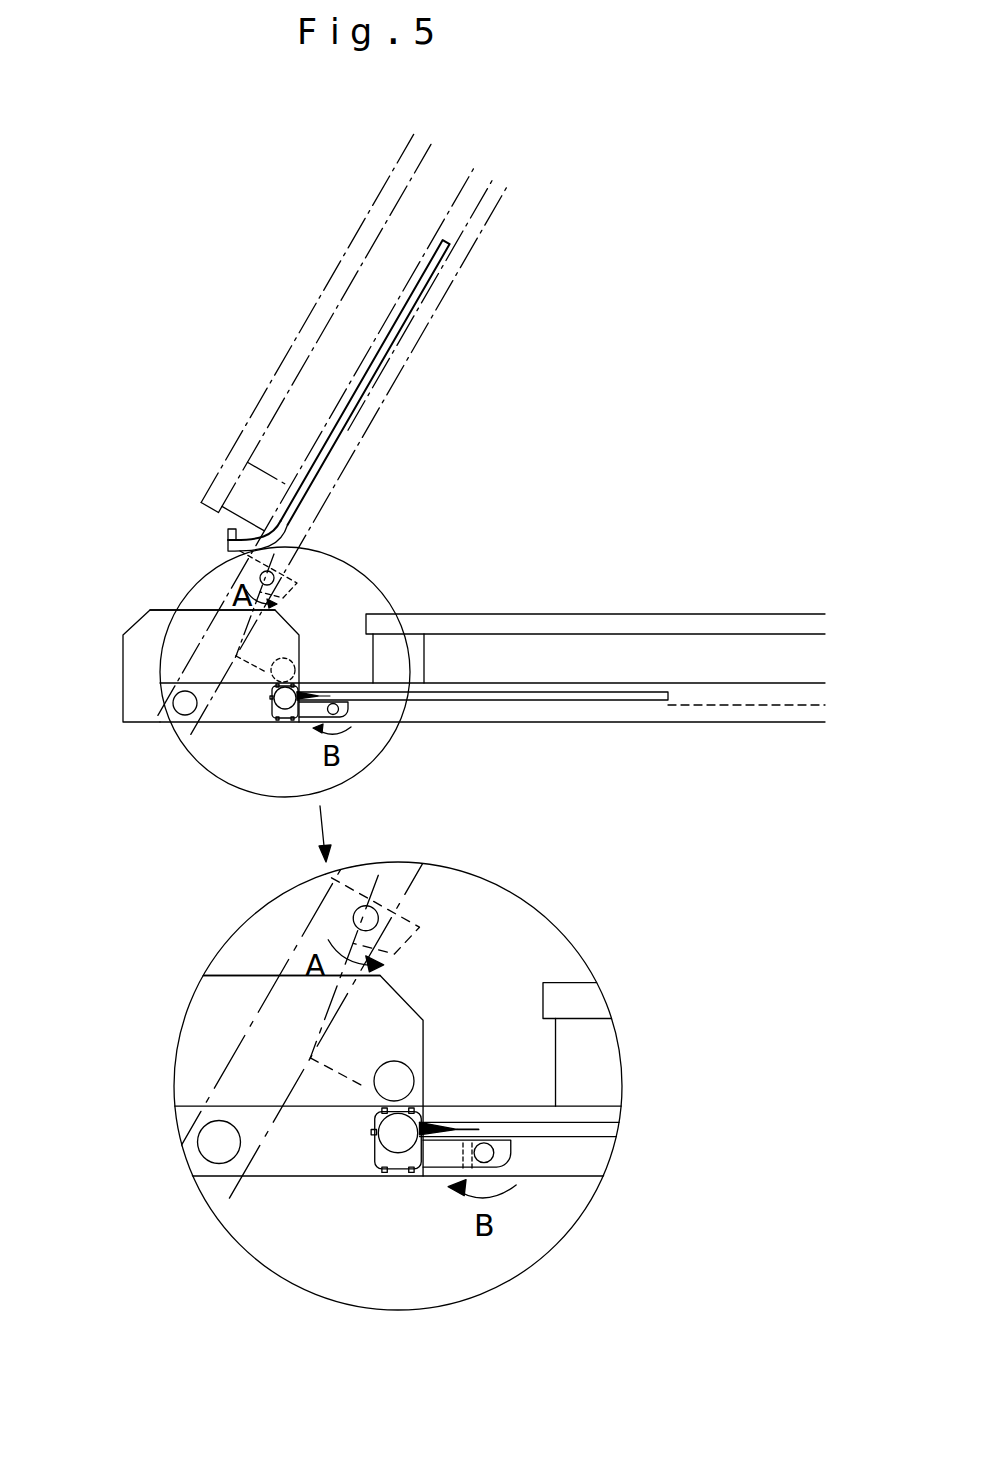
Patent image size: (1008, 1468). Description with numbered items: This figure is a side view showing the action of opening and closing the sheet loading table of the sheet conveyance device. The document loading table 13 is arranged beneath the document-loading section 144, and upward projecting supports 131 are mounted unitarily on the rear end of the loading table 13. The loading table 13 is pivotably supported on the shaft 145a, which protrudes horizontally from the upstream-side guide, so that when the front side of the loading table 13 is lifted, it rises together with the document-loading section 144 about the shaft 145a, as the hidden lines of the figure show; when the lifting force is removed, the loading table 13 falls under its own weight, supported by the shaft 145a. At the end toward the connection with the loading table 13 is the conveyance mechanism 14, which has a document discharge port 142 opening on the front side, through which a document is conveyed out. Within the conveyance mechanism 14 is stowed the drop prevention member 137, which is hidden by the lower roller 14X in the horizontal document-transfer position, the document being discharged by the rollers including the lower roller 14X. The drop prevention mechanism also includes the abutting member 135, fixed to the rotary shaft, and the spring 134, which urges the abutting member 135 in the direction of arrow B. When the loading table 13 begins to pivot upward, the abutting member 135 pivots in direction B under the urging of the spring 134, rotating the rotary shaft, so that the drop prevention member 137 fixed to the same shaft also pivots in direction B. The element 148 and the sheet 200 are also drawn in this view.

The document loading table 13 is at (762, 705).
The conveyance mechanism 14 is at (127, 618).
The arm housing top guide 148 is at (150, 609).
The document-loading section 144 is at (292, 365).
The upward projecting support 131 is at (243, 488).
The document sheet 200 is at (610, 692).
The document discharge port 142 is at (290, 652).
The spring 134 is at (320, 702).
The lower roller 14X is at (282, 719).
The abutting member 135 is at (363, 708).
The drop prevention member 137 is at (458, 1150).
The shaft 145a is at (167, 714).